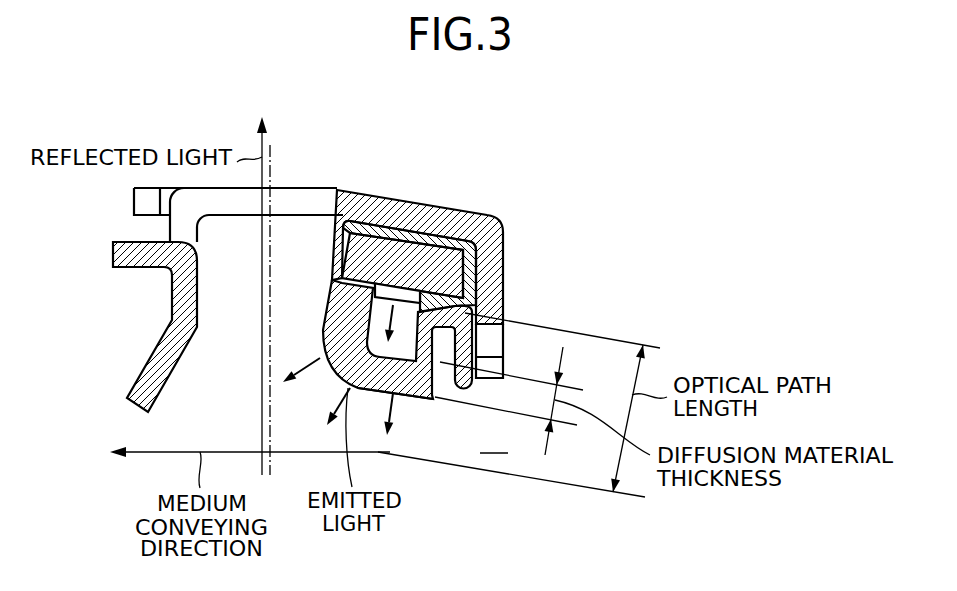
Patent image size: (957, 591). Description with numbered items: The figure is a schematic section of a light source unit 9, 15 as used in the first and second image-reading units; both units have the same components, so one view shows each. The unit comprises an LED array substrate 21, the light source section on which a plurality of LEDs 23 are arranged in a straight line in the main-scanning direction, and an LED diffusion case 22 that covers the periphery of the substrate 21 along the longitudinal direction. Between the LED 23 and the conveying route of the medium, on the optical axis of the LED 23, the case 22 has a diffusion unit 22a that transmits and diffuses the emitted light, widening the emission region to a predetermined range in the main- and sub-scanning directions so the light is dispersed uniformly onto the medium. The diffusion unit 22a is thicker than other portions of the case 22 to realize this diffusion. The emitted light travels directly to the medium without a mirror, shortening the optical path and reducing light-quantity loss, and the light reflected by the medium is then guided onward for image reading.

The light source unit 9 is at (308, 300).
The light source unit 15 is at (306, 350).
The LED array substrate 21 is at (442, 263).
The LED diffusion case 22 is at (332, 296).
The diffusion unit 22a is at (410, 396).
The LED 23 is at (403, 292).